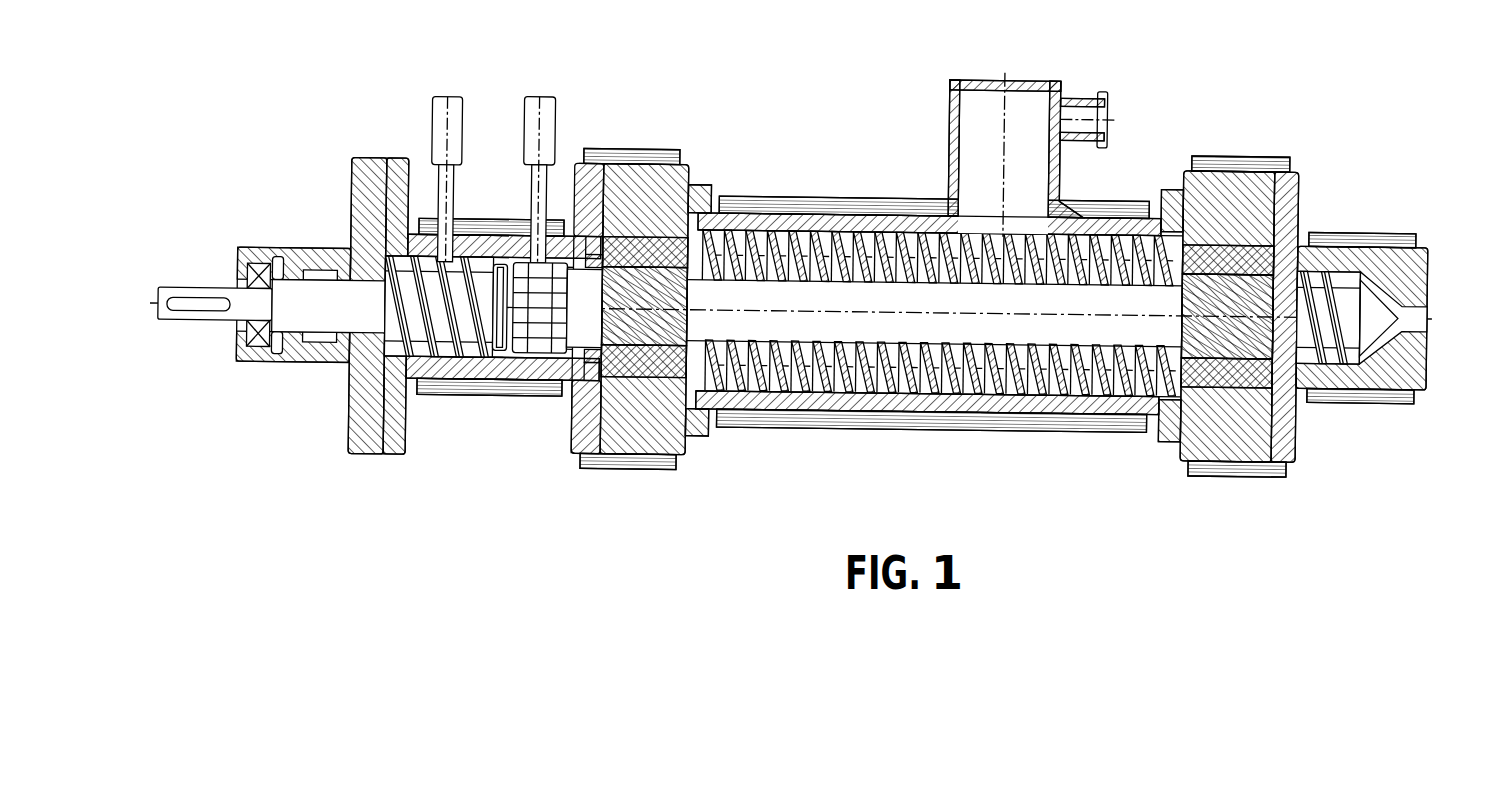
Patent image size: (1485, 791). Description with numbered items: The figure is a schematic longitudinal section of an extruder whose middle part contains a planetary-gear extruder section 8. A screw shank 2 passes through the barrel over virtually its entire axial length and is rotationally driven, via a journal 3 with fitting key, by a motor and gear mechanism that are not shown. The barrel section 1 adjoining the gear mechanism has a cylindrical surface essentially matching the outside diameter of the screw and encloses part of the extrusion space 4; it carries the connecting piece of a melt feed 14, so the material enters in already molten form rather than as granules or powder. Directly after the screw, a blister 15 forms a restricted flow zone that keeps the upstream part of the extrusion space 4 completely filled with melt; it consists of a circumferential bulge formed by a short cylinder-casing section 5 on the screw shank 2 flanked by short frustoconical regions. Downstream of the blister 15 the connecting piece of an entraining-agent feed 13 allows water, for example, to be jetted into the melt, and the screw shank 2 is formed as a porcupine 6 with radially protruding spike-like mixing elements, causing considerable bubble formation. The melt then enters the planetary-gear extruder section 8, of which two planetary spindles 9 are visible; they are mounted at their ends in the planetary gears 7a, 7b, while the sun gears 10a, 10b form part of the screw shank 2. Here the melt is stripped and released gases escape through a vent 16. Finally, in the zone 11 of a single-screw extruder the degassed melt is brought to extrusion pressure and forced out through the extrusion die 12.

The barrel section 1 is at (482, 243).
The screw shank 2 is at (316, 292).
The journal 3 is at (180, 285).
The extrusion space 4 is at (450, 345).
The short section 5 is at (500, 262).
The porcupine 6 is at (540, 330).
The planetary gear 7a is at (665, 210).
The planetary gear 7b is at (1278, 215).
The planetary-gear extruder section 8 is at (840, 215).
The planetary spindles 9 is at (787, 240).
The sun gear 10a is at (636, 338).
The sun gear 10b is at (1205, 350).
The zone of a single-screw extruder 11 is at (1340, 250).
The extrusion die 12 is at (1430, 316).
The entraining-agent feed 13 is at (547, 150).
The melt feed 14 is at (450, 135).
The blister 15 is at (497, 365).
The vent 16 is at (1020, 72).